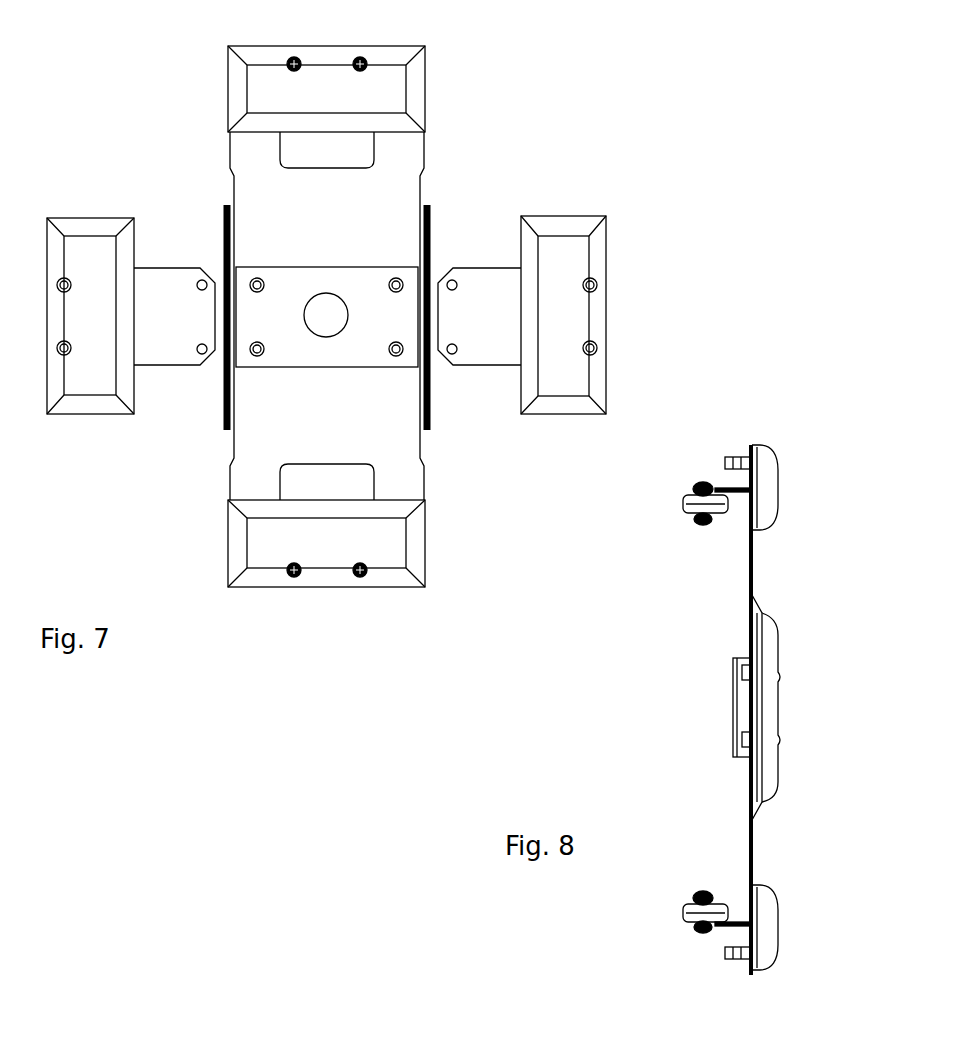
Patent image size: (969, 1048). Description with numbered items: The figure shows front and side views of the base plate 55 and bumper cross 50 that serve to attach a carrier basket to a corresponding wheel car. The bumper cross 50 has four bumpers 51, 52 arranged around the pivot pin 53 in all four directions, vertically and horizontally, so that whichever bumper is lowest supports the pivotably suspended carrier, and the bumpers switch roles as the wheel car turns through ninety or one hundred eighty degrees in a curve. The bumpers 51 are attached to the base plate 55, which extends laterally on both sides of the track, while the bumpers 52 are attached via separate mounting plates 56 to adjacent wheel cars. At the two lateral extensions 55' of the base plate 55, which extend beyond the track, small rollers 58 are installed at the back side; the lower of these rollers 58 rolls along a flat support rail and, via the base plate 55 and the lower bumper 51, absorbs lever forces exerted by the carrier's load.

In FIG. 7, the bumper cross 50 is at (592, 86).
In FIG. 7, the bumpers 51 is at (428, 69).
In FIG. 8, the bumpers 51 is at (779, 486).
In FIG. 7, the bumpers 52 is at (77, 410).
In FIG. 8, the bumpers 52 is at (781, 690).
In FIG. 7, the pivot pin 53 is at (332, 310).
In FIG. 7, the base plate 55 is at (274, 316).
In FIG. 8, the base plate 55 is at (698, 710).
In FIG. 8, the lateral extensions 55' is at (714, 685).
In FIG. 7, the side arm 56 is at (175, 348).
In FIG. 8, the rollers 58 is at (693, 500).